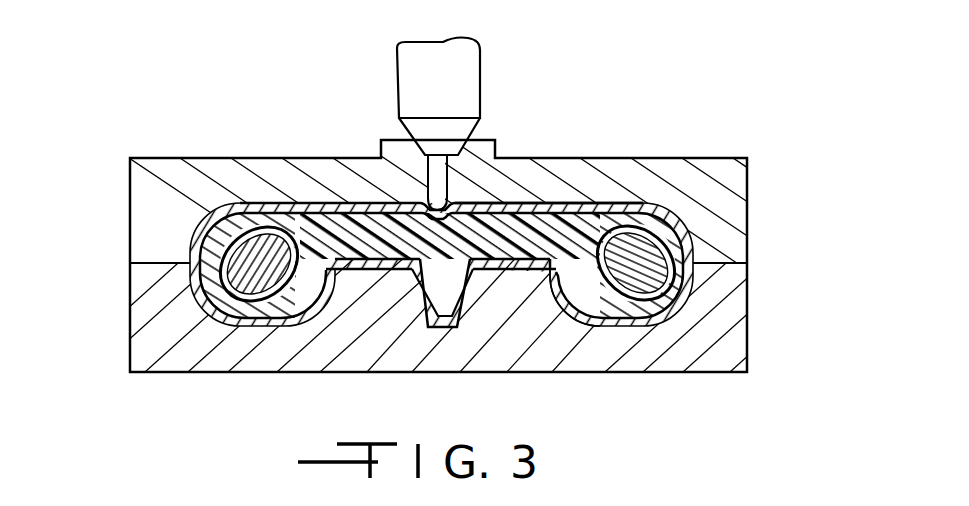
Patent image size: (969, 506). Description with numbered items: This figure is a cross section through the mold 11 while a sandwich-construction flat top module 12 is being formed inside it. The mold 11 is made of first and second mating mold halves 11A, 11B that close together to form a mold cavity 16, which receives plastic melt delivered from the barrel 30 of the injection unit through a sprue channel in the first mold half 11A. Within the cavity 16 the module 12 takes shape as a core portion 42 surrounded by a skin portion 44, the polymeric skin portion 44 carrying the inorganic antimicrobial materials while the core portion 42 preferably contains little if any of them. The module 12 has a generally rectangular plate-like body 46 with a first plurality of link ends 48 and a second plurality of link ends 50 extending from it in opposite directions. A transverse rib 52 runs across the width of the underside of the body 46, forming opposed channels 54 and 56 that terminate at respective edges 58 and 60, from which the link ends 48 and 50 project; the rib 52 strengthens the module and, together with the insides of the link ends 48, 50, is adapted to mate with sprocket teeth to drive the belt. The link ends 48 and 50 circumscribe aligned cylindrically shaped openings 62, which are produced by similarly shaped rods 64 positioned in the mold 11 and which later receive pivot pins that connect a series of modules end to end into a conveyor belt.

The mold 11 is at (707, 158).
The first mold half 11A is at (725, 192).
The second mold half 11B is at (727, 350).
The flat top module 12 is at (594, 201).
The mold cavity 16 is at (448, 173).
The barrel 30 is at (467, 80).
The core portion 42 is at (607, 307).
The skin portion 44 is at (750, 263).
The plate-like body 46 is at (541, 202).
The first plurality of link ends 48 is at (672, 236).
The second plurality of link ends 50 is at (232, 207).
The transverse rib 52 is at (377, 273).
The channel 54 is at (507, 272).
The channel 56 is at (358, 273).
The edge 58 is at (545, 283).
The edge 60 is at (347, 310).
The cylindrically shaped openings 62 is at (232, 290).
The rods 64 is at (237, 323).